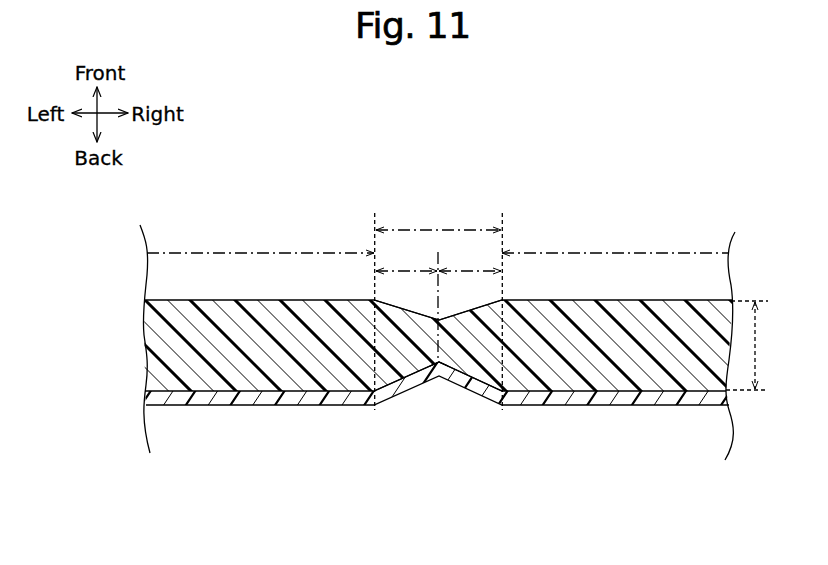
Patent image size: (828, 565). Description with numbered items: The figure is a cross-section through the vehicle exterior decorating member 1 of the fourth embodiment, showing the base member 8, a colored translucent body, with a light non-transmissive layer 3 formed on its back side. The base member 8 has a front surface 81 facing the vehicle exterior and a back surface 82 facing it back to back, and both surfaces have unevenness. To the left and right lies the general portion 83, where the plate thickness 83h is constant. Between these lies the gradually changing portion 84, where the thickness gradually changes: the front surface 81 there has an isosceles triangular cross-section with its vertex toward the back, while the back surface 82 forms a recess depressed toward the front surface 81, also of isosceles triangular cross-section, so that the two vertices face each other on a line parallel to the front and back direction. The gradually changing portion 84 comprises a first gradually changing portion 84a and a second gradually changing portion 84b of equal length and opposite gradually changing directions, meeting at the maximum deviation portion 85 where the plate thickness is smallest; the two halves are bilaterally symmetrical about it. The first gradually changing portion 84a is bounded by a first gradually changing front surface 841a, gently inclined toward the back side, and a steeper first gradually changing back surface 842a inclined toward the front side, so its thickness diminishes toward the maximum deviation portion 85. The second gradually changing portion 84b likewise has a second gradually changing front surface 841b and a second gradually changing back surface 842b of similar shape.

The vehicle exterior decorating member 1 is at (444, 335).
The light non-transmissive layer 3 is at (155, 397).
The base member 8 is at (163, 335).
The front surface 81 is at (164, 298).
The back surface 82 is at (169, 393).
The general portion 83 is at (222, 253).
The thickness of the general portion 83h is at (755, 346).
The gradually changing portion 84 is at (425, 229).
The first gradually changing portion 84a is at (405, 268).
The second gradually changing portion 84b is at (470, 268).
The first gradually changing front surface 841a is at (393, 301).
The second gradually changing front surface 841b is at (487, 301).
The first gradually changing back surface 842a is at (399, 381).
The second gradually changing back surface 842b is at (477, 380).
The maximum deviation portion 85 is at (439, 366).